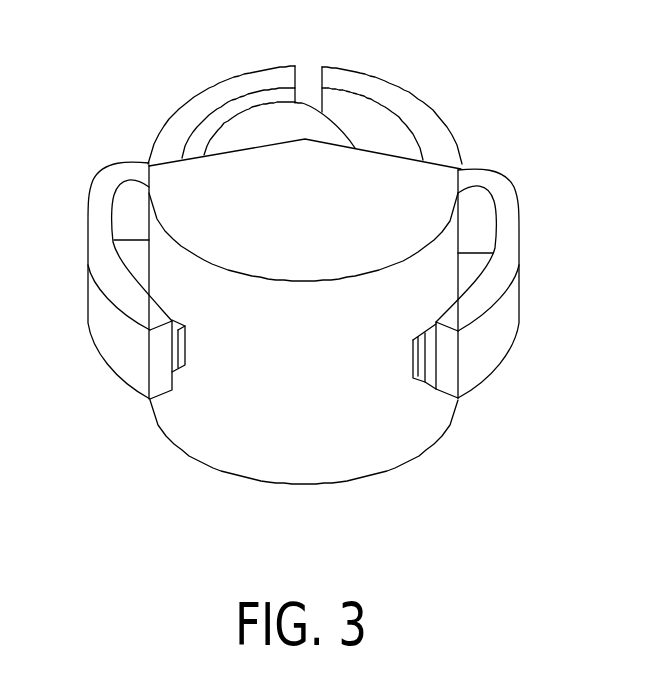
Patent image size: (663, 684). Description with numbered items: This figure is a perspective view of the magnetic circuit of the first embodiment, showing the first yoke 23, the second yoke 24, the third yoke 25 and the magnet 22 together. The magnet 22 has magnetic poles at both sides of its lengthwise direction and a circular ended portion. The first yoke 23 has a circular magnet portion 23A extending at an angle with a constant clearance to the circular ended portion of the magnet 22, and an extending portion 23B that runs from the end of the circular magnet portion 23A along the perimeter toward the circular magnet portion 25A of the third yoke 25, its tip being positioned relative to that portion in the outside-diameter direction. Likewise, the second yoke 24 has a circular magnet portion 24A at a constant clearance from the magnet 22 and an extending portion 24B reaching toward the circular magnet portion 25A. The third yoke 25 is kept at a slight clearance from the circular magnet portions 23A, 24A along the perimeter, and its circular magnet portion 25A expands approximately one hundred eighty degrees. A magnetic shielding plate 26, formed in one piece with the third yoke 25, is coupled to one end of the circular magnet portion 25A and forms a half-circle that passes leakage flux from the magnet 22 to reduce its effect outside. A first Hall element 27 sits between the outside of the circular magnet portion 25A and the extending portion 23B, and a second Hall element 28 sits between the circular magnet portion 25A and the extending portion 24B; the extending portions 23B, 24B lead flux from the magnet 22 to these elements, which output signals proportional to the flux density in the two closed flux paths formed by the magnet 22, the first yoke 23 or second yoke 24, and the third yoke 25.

The magnet 22 is at (297, 115).
The first yoke 23 is at (433, 133).
The circular magnet portion 23A is at (372, 88).
The extending portion 23B is at (497, 328).
The second yoke 24 is at (166, 146).
The circular magnet portion 24A is at (218, 97).
The extending portion 24B is at (128, 360).
The third yoke 25 is at (340, 463).
The circular magnet portion 25A is at (267, 453).
The magnetic shielding plate 26 is at (440, 190).
The first Hall element 27 is at (417, 378).
The second Hall element 28 is at (182, 365).